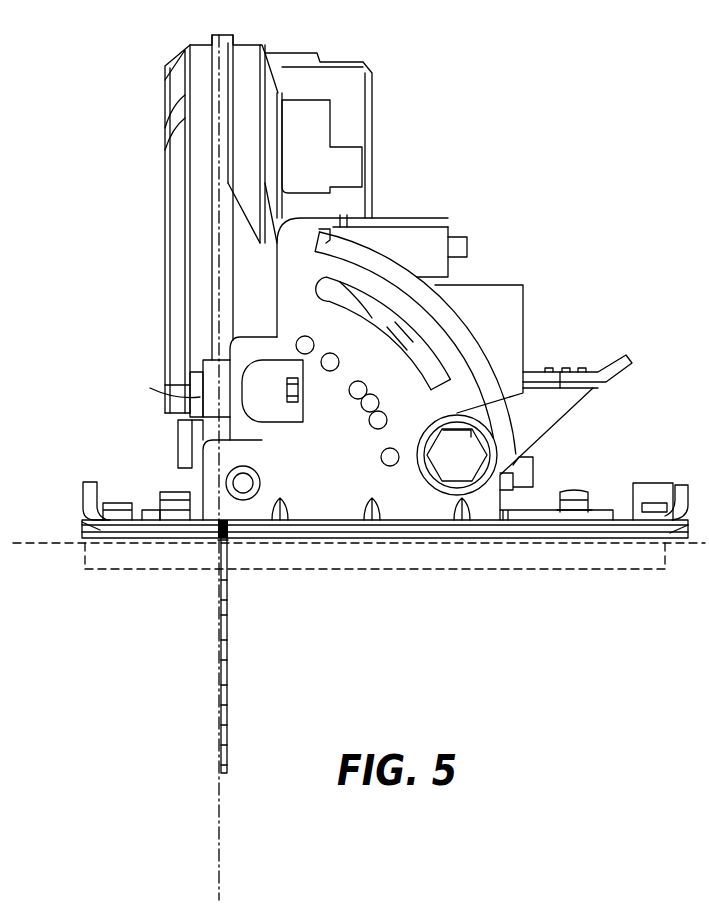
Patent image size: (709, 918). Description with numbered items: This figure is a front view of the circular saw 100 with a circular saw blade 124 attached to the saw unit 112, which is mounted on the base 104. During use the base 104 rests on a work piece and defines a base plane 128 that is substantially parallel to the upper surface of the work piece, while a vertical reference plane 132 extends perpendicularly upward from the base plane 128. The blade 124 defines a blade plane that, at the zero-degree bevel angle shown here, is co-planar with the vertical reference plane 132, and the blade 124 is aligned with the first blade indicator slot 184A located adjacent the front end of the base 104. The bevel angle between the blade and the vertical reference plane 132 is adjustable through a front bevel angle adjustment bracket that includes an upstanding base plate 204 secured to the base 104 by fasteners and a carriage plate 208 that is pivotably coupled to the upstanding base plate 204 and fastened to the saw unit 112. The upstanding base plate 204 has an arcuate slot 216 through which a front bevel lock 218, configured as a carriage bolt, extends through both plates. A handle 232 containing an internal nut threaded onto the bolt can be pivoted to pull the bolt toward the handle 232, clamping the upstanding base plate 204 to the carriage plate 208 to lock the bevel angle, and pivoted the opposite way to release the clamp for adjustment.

The circular saw 100 is at (402, 127).
The saw unit 112 is at (137, 272).
The carriage plate 208 is at (240, 395).
The arcuate slot 216 is at (370, 275).
The upstanding base plate 204 is at (428, 318).
The front bevel lock 218 is at (461, 440).
The handle 232 is at (578, 373).
The base 104 is at (410, 538).
The first blade indicator slot 184A is at (227, 545).
The circular saw blade 124 is at (229, 615).
The base plane 128 is at (58, 546).
The vertical reference plane 132 is at (166, 467).